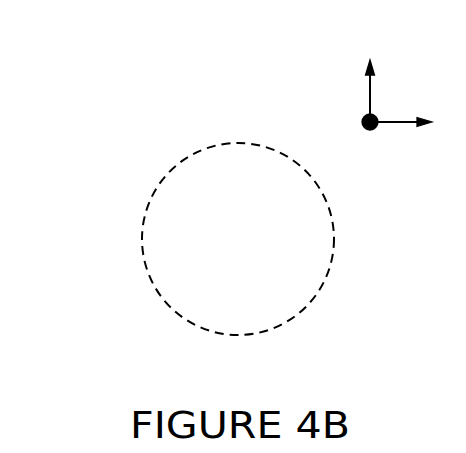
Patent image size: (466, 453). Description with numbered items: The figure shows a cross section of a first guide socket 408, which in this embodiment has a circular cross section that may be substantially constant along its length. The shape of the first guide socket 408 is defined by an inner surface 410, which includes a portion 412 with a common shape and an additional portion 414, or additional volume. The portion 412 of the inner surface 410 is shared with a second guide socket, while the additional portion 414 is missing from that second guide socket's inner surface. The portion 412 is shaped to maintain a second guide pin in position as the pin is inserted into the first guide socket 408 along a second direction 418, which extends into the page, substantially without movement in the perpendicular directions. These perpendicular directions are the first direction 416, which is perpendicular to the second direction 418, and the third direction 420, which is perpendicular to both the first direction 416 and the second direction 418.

The first guide socket 408 is at (96, 58).
The inner surface 410 is at (225, 155).
The portion with a common shape 412 is at (188, 208).
The additional portion 414 is at (207, 310).
The first direction 416 is at (367, 90).
The second direction 418 is at (366, 126).
The third direction 420 is at (398, 126).